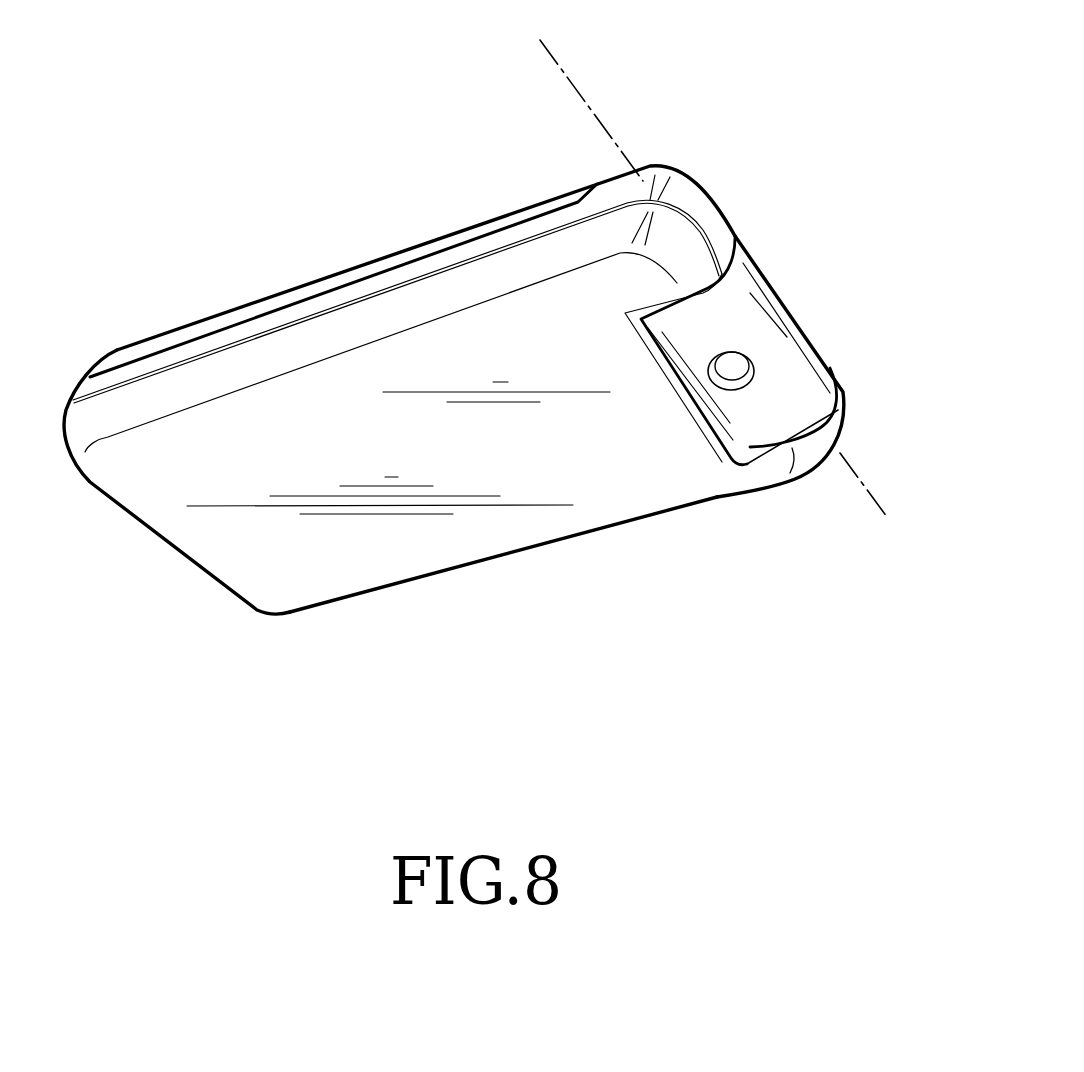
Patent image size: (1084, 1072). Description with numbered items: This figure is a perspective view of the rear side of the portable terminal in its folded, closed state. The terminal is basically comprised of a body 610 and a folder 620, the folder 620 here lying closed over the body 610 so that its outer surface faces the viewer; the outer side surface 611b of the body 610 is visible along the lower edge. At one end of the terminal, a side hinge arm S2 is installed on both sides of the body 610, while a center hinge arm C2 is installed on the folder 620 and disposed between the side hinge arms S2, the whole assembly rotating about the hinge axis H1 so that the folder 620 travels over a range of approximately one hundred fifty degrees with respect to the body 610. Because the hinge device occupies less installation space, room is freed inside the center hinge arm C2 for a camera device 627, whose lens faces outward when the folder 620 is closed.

The body 610 is at (511, 541).
The side surface of lower housing 611b is at (352, 584).
The folder 620 is at (280, 282).
The camera device 627 is at (735, 365).
The center hinge arm C2 is at (787, 299).
The hinge axis H1 is at (590, 110).
The side hinge arm S2 is at (683, 198).